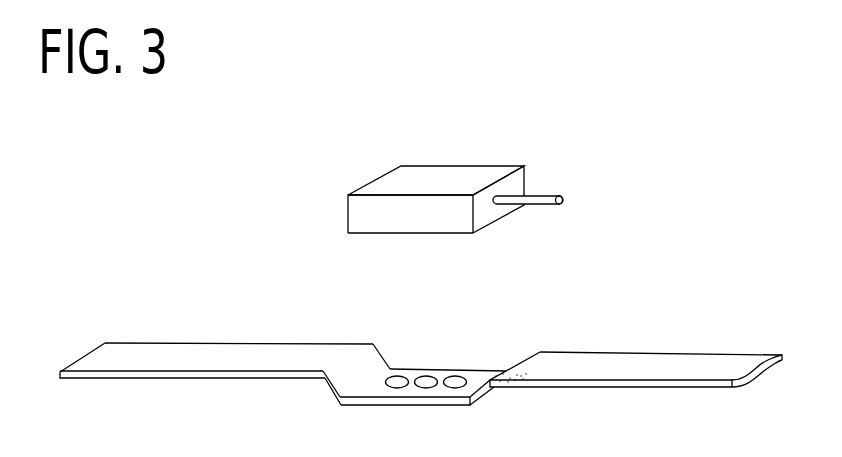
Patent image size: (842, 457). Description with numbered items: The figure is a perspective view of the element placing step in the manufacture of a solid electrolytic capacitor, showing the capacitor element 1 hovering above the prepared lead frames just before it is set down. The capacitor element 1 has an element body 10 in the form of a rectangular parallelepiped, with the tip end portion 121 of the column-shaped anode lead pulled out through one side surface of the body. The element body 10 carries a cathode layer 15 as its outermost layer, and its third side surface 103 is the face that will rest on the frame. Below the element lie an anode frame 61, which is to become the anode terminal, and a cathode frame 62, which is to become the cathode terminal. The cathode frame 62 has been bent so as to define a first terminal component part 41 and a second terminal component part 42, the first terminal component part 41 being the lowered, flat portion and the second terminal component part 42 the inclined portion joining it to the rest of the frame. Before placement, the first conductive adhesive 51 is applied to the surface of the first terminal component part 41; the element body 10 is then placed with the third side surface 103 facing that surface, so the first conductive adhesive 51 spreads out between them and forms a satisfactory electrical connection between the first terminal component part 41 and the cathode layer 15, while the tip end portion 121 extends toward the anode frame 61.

The capacitor element 1 is at (478, 203).
The element body 10 is at (442, 175).
The cathode layer 15 is at (365, 233).
The third side surface 103 is at (433, 236).
The tip end portion 121 is at (538, 205).
The first terminal component part 41 is at (423, 348).
The second terminal component part 42 is at (374, 362).
The first conductive adhesive 51 is at (428, 380).
The anode frame 61 is at (628, 360).
The cathode frame 62 is at (250, 355).